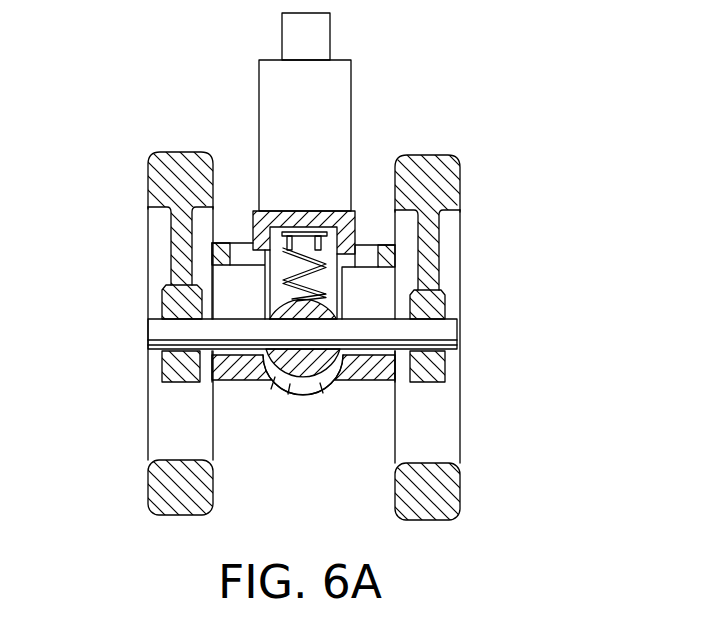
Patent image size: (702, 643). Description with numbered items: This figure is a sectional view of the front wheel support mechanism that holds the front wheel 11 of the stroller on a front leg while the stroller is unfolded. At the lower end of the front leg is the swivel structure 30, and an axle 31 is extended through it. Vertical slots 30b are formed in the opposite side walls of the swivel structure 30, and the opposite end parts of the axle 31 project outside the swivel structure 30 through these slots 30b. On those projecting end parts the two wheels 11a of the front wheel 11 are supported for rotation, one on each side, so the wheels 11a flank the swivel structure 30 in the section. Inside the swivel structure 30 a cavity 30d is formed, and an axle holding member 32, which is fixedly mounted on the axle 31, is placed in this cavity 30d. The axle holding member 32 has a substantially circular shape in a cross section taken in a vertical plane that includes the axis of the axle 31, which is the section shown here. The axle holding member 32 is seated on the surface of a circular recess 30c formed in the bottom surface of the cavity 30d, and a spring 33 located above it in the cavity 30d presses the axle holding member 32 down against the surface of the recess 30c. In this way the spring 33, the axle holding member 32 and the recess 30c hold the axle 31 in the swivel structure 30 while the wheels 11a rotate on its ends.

The front wheel 11 is at (359, 293).
The wheels 11a is at (420, 508).
The swivel structure 30 is at (343, 92).
The vertical slots 30b is at (222, 283).
The circular recess 30c is at (315, 373).
The cavity 30d is at (362, 228).
The axle 31 is at (440, 333).
The axle holding member 32 is at (281, 386).
The spring 33 is at (253, 212).